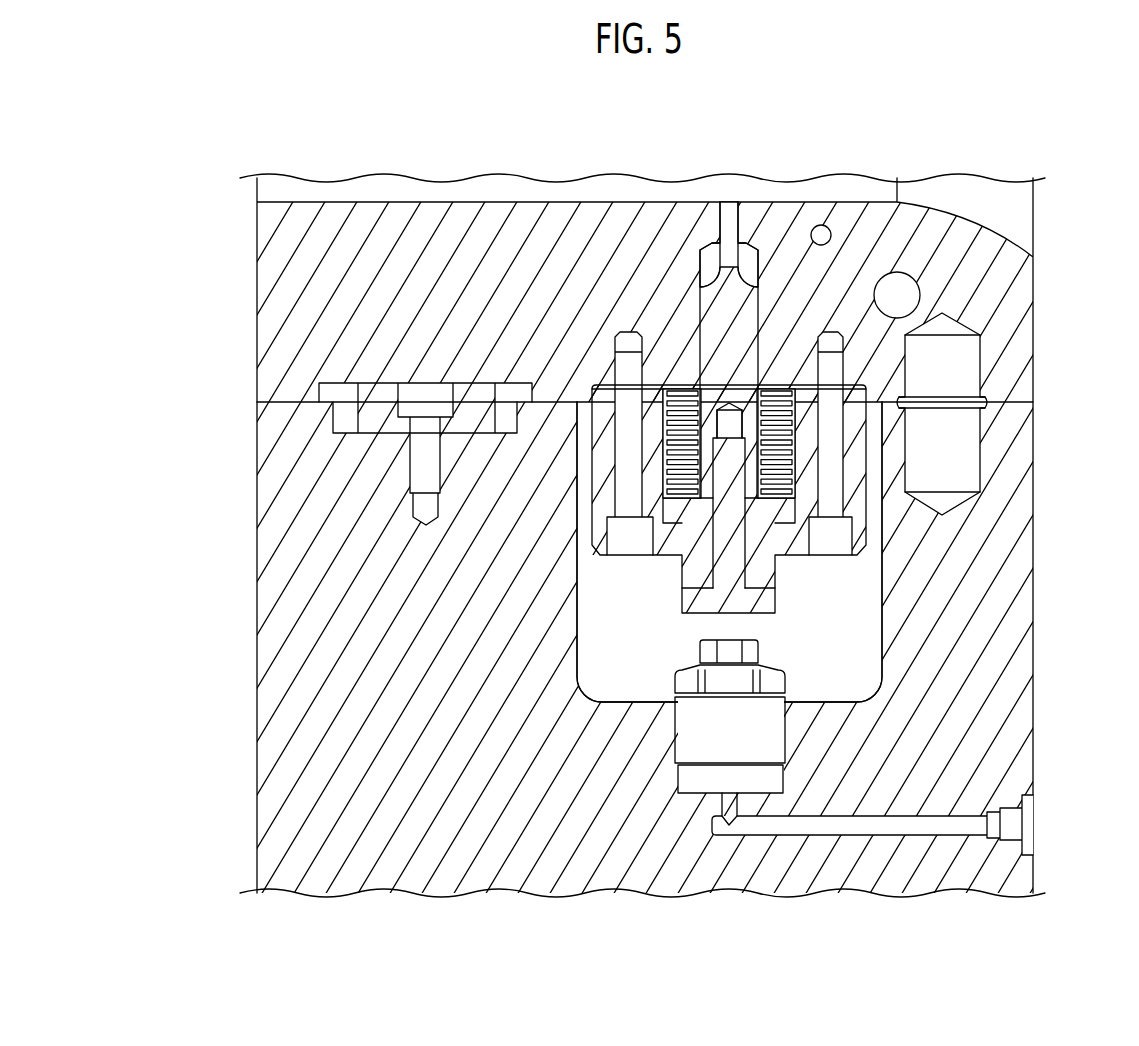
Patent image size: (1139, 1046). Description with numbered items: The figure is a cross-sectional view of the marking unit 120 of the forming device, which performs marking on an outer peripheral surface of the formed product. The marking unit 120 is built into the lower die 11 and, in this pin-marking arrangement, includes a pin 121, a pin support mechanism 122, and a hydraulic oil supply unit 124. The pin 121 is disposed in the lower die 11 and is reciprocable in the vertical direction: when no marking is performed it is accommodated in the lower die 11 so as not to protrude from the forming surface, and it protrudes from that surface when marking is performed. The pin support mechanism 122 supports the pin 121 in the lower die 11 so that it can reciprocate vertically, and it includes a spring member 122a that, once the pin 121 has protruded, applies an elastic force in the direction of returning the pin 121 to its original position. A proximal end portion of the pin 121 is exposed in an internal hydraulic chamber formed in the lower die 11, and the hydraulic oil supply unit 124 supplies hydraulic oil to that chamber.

The lower die 11 is at (245, 546).
The marking unit 120 is at (887, 615).
The pin 121 is at (736, 342).
The pin support mechanism 122 is at (665, 559).
The spring member 122a is at (686, 400).
The hydraulic oil supply unit 124 is at (768, 656).